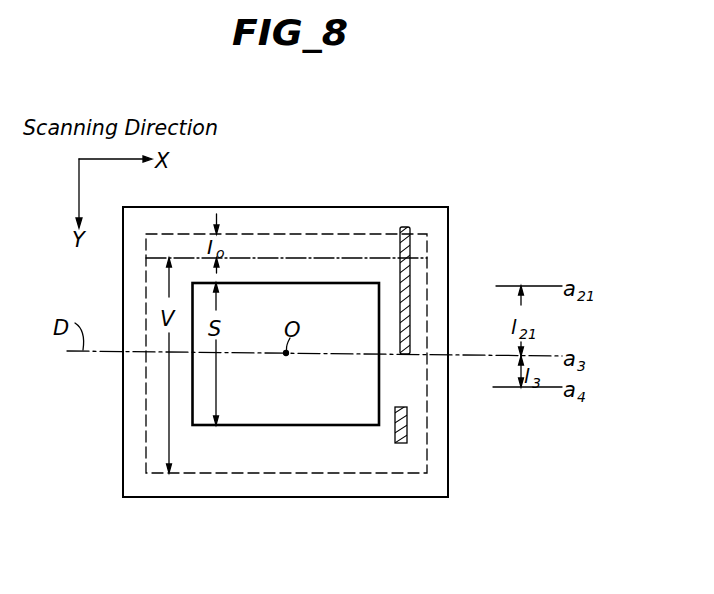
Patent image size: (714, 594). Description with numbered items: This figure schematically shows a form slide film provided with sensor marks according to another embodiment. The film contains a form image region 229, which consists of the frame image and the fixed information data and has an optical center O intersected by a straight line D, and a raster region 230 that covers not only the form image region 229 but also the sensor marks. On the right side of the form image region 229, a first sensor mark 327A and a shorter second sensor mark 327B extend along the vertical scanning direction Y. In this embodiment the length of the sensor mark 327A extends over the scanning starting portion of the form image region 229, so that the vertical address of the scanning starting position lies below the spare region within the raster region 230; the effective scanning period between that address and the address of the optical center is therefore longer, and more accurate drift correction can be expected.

The form image region 229 is at (318, 408).
The raster region 230 is at (241, 458).
The sensor mark 327A is at (407, 227).
The second sensor mark 327B is at (407, 423).